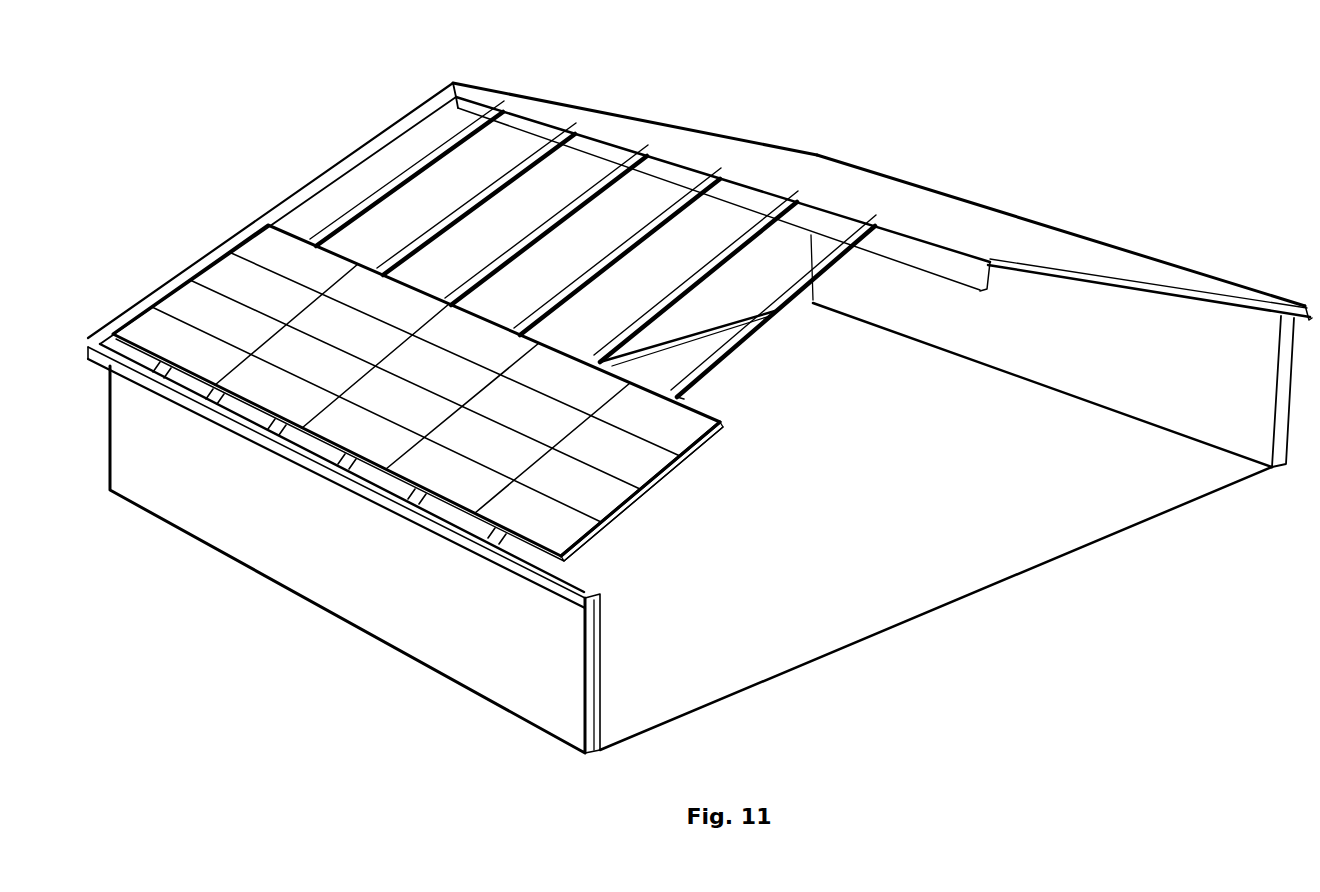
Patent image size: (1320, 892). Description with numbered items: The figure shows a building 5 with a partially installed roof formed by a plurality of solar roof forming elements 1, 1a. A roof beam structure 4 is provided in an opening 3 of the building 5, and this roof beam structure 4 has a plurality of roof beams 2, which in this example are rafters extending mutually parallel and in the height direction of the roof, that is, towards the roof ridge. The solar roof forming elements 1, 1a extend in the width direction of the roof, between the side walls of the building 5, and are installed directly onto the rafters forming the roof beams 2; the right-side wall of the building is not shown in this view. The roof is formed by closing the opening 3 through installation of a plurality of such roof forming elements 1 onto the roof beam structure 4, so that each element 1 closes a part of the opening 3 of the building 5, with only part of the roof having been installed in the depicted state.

The solar roof forming element 1 is at (608, 567).
The solar roof forming element 1a is at (643, 538).
The roof beams 2 is at (427, 167).
The opening 3 is at (645, 185).
The roof beam structure 4 is at (336, 132).
The building 5 is at (1186, 222).